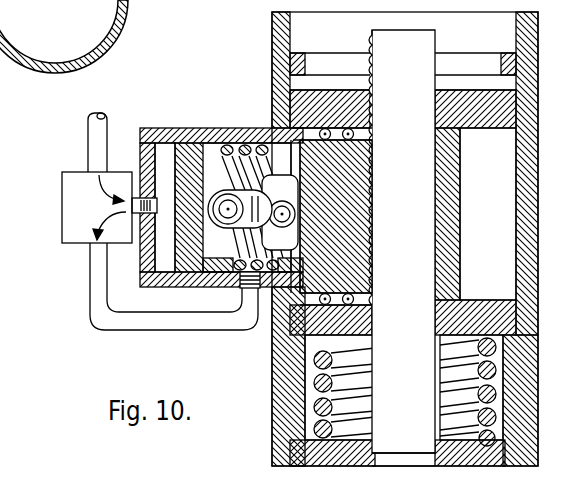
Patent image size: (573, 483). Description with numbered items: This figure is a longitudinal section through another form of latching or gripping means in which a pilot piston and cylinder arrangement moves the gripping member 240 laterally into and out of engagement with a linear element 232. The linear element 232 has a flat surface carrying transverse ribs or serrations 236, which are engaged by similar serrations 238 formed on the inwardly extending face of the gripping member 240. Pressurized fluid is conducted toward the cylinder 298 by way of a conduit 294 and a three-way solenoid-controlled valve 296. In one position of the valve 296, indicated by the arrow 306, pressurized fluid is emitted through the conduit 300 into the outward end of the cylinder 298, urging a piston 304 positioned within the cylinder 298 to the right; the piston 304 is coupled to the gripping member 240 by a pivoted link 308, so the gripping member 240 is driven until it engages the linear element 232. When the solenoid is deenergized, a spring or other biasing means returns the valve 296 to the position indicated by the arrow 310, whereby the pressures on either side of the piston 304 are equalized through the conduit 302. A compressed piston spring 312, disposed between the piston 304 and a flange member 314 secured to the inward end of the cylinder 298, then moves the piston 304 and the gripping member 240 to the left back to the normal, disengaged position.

The linear element 232 is at (418, 39).
The transverse ribs or serrations 236 is at (373, 84).
The serrations 238 is at (373, 214).
The gripping member 240 is at (345, 175).
The conduit 294 is at (88, 138).
The three-way solenoid-controlled valve 296 is at (62, 189).
The cylinder 298 is at (177, 131).
The conduit 300 is at (134, 197).
The conduit 302 is at (98, 282).
The piston 304 is at (212, 291).
The arrow 306 is at (96, 194).
The pivoted link 308 is at (280, 213).
The arrow 310 is at (96, 226).
The piston spring 312 is at (244, 131).
The flange member 314 is at (253, 204).